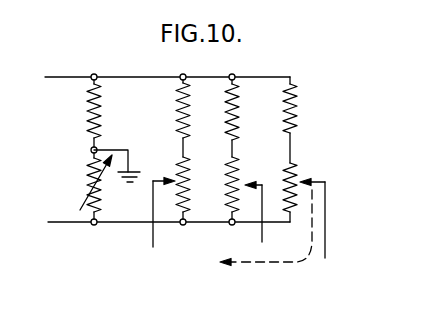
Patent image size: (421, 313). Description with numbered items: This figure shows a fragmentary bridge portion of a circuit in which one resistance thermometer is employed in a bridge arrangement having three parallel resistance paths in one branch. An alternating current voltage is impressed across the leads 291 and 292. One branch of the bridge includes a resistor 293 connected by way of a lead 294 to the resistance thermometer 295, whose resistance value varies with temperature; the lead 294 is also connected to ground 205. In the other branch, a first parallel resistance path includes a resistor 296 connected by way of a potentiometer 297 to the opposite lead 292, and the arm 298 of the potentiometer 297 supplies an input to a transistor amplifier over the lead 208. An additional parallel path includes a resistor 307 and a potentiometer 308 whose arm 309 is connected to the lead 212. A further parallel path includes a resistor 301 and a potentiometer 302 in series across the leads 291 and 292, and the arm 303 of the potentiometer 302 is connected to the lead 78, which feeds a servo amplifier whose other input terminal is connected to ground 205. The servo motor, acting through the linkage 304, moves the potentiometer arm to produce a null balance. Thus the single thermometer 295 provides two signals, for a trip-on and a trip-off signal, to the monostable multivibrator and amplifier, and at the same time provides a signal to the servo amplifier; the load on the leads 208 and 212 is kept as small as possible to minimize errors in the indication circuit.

The lead 291 is at (59, 77).
The lead 292 is at (70, 224).
The resistor 293 is at (86, 107).
The lead 294 is at (89, 150).
The resistance thermometer 295 is at (86, 191).
The resistor 296 is at (177, 99).
The potentiometer 297 is at (189, 226).
The arm 298 is at (161, 178).
The ground 205 is at (144, 172).
The lead 208 is at (152, 237).
The resistor 307 is at (238, 121).
The arm 309 is at (253, 181).
The potentiometer 308 is at (236, 225).
The lead 212 is at (263, 234).
The resistor 301 is at (292, 116).
The potentiometer 302 is at (290, 173).
The arm 303 is at (315, 180).
The linkage 304 is at (313, 212).
The lead 78 is at (327, 240).